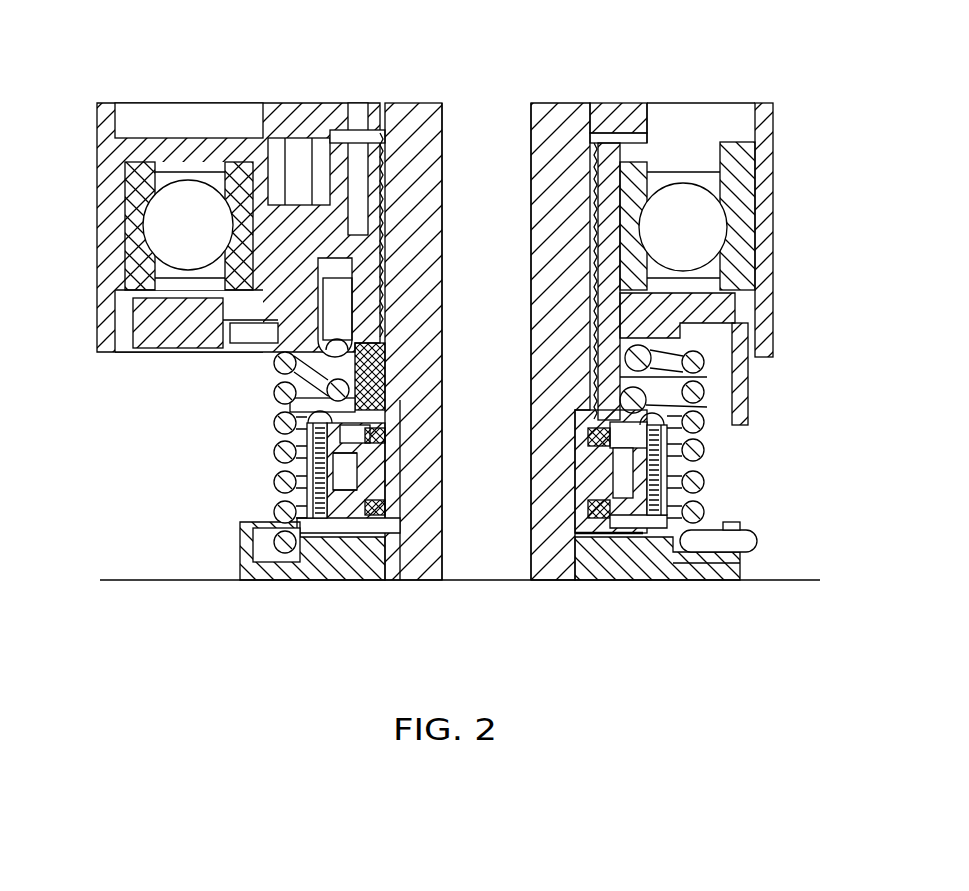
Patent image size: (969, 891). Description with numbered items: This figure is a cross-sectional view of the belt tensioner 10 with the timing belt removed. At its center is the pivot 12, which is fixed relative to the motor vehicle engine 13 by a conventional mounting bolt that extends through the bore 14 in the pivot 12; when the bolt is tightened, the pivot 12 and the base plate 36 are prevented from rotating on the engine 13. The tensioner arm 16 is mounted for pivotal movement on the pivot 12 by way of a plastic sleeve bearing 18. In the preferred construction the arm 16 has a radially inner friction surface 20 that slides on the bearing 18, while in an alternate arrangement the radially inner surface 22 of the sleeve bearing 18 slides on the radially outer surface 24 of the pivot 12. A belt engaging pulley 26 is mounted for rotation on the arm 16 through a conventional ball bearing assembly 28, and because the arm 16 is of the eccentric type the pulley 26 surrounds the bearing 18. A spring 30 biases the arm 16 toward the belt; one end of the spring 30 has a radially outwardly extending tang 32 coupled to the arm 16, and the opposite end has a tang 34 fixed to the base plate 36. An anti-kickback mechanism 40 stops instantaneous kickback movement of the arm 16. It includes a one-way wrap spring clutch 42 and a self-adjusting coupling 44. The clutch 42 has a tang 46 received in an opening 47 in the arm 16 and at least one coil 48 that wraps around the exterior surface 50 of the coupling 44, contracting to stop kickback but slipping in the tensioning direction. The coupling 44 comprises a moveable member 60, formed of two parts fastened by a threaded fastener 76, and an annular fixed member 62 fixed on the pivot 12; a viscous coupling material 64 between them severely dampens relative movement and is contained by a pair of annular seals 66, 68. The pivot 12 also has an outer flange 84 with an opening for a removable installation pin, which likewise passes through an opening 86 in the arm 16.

The belt tensioner 10 is at (789, 85).
The pivot 12 is at (540, 480).
The motor vehicle engine 13 is at (795, 580).
The bore 14 is at (487, 562).
The tensioner arm 16 is at (285, 240).
The sleeve bearing 18 is at (385, 250).
The radially inner friction surface 20 is at (366, 210).
The radially inner surface 22 is at (583, 207).
The radially outer surface 24 is at (620, 157).
The belt engaging pulley 26 is at (768, 248).
The ball bearing assembly 28 is at (700, 222).
The spring 30 is at (268, 402).
The tang 32 is at (247, 338).
The tang 34 is at (745, 538).
The base plate 36 is at (637, 572).
The anti-kickback mechanism 40 is at (312, 396).
The one-way wrap spring clutch 42 is at (647, 360).
The self-adjusting coupling 44 is at (672, 416).
The tang 46 is at (340, 313).
The opening 47 is at (265, 288).
The coil 48 is at (630, 400).
The exterior surface 50 is at (280, 377).
The moveable member 60 is at (338, 505).
The fixed member 62 is at (390, 478).
The coupling material 64 is at (360, 510).
The annular seal 66 is at (575, 437).
The annular seal 68 is at (575, 520).
The threaded fastener 76 is at (655, 478).
The outer flange 84 is at (358, 103).
The opening 86 is at (358, 168).